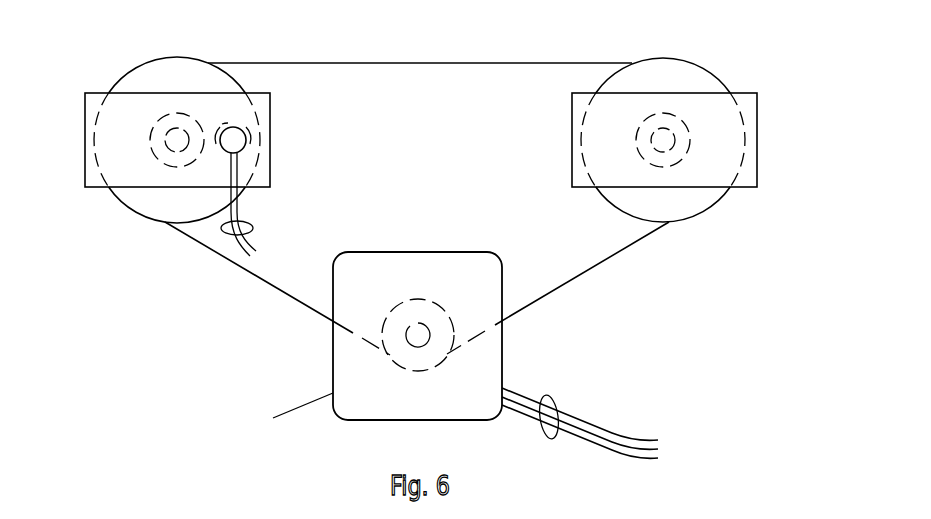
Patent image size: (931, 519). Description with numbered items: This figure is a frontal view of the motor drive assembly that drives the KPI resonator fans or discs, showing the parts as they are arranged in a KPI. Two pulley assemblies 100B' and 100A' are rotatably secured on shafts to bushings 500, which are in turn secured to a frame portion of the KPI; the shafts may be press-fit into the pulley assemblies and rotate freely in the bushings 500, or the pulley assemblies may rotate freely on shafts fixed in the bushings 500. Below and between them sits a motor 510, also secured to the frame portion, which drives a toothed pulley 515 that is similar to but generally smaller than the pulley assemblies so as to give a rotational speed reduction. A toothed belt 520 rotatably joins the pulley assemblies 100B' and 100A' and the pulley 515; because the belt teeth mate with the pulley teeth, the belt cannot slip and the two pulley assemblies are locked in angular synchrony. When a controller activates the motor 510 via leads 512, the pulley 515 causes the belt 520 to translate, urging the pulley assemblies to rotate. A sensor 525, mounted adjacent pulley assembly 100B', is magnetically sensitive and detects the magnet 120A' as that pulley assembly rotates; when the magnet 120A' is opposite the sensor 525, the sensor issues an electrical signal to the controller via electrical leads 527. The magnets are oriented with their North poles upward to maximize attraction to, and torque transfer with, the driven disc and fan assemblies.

The pulley assembly 100B' is at (157, 132).
The pulley assembly 100A' is at (687, 130).
The bushing 500 is at (85, 118).
The magnet 120A' is at (273, 128).
The sensor 525 is at (246, 150).
The electrical leads 527 is at (253, 228).
The toothed belt 520 is at (428, 63).
The motor 510 is at (333, 363).
The toothed pulley 515 is at (418, 299).
The leads 512 is at (556, 402).